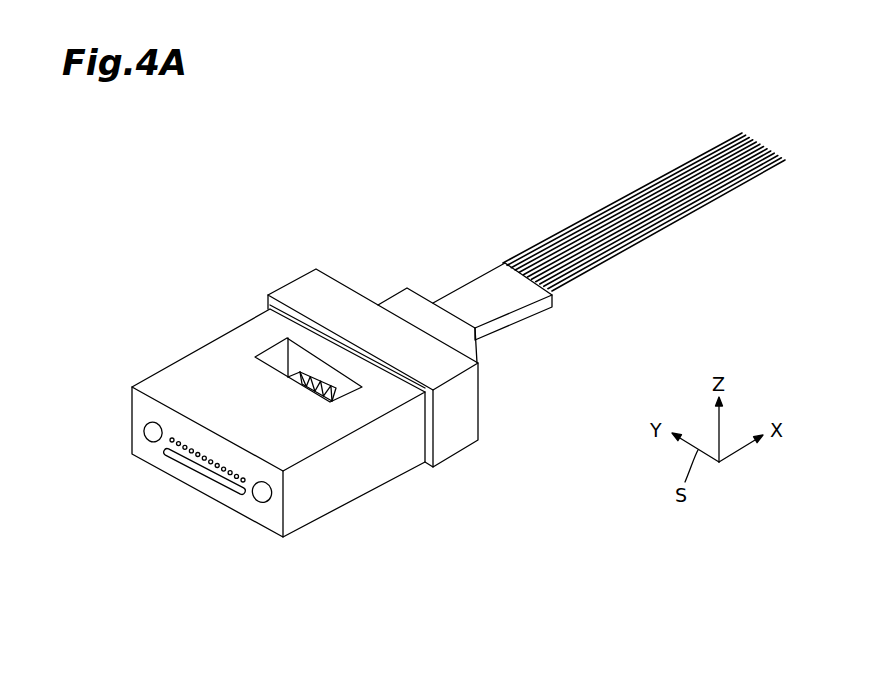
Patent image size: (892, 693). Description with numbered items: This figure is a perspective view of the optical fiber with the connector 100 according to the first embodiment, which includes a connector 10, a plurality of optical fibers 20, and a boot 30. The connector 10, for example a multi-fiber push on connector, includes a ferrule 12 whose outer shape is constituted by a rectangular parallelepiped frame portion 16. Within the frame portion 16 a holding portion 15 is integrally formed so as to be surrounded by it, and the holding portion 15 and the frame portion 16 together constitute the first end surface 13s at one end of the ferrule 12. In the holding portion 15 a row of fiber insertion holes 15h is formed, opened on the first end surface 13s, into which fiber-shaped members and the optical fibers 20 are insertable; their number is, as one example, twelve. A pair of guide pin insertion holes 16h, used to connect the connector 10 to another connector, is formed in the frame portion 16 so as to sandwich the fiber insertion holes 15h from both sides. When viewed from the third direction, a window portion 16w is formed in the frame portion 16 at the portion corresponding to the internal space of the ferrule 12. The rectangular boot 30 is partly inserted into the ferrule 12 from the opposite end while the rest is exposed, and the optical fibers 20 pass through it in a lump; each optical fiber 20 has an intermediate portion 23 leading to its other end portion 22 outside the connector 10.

The optical fiber with connector 100 is at (407, 119).
The connector 10 is at (293, 281).
The ferrule 12 is at (362, 473).
The first end surface 13s is at (274, 522).
The holding portion 15 is at (208, 442).
The fiber insertion holes 15h is at (203, 475).
The frame portion 16 is at (173, 383).
The guide pin insertion holes 16h is at (150, 440).
The window portion 16w is at (296, 352).
The optical fibers 20 is at (740, 196).
The other end portion 22 is at (603, 203).
The intermediate portion 23 is at (470, 268).
The boot 30 is at (400, 303).